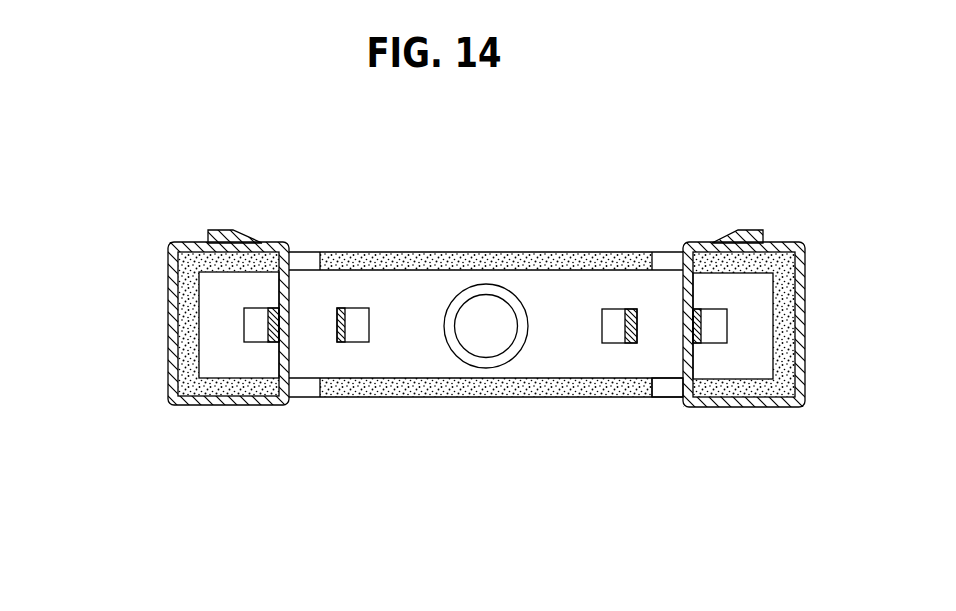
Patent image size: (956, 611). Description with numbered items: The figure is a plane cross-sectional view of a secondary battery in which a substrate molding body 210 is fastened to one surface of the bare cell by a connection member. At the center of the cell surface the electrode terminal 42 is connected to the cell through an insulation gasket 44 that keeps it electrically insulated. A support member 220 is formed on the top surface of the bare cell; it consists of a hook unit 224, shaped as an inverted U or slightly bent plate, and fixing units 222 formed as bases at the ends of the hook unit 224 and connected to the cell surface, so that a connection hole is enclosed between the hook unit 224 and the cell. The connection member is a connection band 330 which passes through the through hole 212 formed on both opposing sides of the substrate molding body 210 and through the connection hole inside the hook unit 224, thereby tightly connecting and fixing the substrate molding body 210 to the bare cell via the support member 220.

The connection band 330 is at (168, 312).
The substrate molding body 210 is at (596, 262).
The through hole 212 is at (666, 392).
The insulation gasket 44 is at (453, 318).
The electrode terminal 42 is at (488, 308).
The support member 220 is at (335, 428).
The fixing unit 222 is at (362, 333).
The hook unit 224 is at (340, 343).